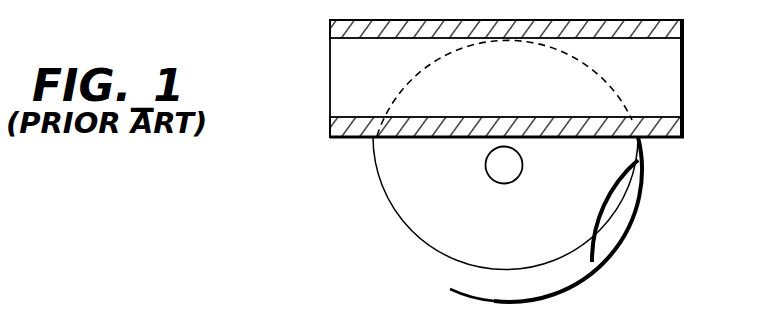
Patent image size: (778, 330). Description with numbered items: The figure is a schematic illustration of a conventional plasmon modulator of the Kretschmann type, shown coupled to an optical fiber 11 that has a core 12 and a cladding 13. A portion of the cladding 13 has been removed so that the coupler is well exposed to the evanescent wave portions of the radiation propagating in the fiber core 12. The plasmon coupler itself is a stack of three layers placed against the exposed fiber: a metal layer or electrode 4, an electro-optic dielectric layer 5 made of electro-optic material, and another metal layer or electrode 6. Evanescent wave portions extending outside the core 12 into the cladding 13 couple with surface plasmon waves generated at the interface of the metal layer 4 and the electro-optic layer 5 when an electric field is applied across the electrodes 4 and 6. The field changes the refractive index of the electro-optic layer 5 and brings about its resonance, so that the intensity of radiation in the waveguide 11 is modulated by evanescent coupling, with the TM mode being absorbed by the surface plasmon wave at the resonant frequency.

The metal layer or electrode 4 is at (683, 128).
The electro-optic dielectric layer 5 is at (675, 73).
The metal layer or electrode 6 is at (682, 31).
The optical fiber 11 is at (641, 170).
The core 12 is at (502, 170).
The cladding 13 is at (610, 205).